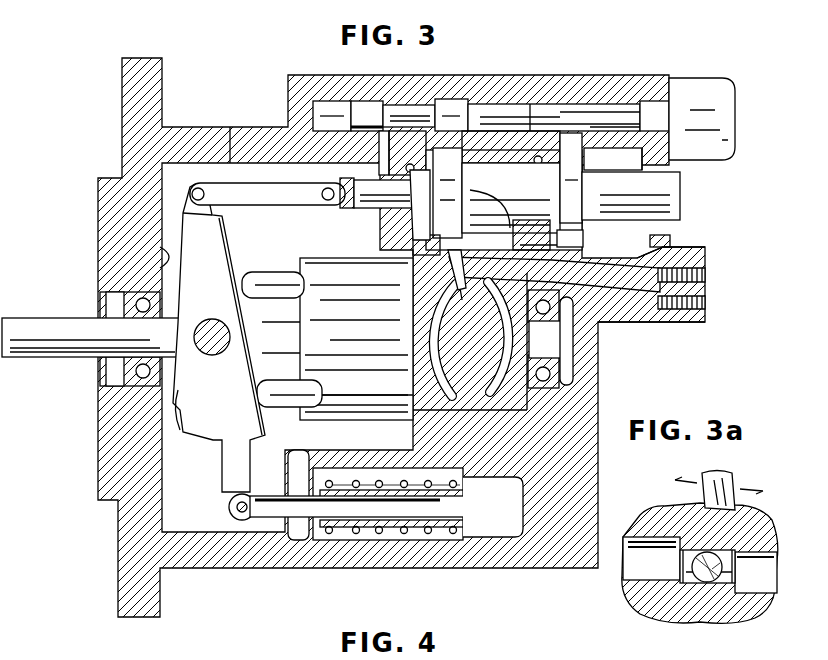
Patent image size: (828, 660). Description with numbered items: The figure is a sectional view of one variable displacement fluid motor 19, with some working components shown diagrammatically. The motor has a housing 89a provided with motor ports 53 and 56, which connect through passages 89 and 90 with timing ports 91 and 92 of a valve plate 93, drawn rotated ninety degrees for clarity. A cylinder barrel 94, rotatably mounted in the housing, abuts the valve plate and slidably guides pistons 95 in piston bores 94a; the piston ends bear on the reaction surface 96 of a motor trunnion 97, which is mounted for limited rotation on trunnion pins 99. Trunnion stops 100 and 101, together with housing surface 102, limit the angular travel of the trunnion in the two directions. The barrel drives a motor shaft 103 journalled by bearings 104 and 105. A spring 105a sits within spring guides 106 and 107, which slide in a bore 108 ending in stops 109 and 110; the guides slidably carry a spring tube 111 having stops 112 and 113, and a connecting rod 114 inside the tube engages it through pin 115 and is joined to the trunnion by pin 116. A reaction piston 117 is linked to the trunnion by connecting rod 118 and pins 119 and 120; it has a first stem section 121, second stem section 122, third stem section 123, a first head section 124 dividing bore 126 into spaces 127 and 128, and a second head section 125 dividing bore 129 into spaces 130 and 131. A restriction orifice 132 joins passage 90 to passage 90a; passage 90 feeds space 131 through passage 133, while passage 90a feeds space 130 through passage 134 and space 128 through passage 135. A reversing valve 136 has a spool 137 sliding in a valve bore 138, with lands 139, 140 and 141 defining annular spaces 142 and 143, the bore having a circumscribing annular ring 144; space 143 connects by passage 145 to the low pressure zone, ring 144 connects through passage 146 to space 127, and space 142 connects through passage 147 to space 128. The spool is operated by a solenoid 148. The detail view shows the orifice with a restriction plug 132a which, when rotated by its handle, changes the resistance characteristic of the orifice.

In FIG. 3, the fluid motor 19 is at (118, 110).
In FIG. 3A, the fluid motor 19 is at (650, 520).
In FIG. 3, the motor port 53 is at (705, 302).
In FIG. 3, the motor port 56 is at (705, 276).
In FIG. 3, the passage 89 is at (645, 312).
In FIG. 3, the housing 89a is at (222, 132).
In FIG. 3, the passage 90 is at (645, 264).
In FIG. 3A, the passage 90 is at (765, 582).
In FIG. 3, the passage 90a is at (478, 292).
In FIG. 3A, the passage 90a is at (636, 570).
In FIG. 3, the timing port 91 is at (512, 340).
In FIG. 3, the timing port 92 is at (438, 372).
In FIG. 3, the valve plate 93 is at (480, 402).
In FIG. 3, the cylinder barrel 94 is at (357, 319).
In FIG. 3, the piston bores 94a is at (332, 420).
In FIG. 3, the pistons 95 is at (280, 408).
In FIG. 3, the reaction surface 96 is at (238, 272).
In FIG. 3, the motor trunnion 97 is at (214, 295).
In FIG. 3, the trunnion pins 99 is at (222, 355).
In FIG. 3, the motor trunnion stop 100 is at (160, 270).
In FIG. 3, the motor trunnion stop 101 is at (188, 425).
In FIG. 3, the surface 102 is at (162, 474).
In FIG. 3, the motor shaft 103 is at (40, 357).
In FIG. 3, the bearing 104 is at (150, 390).
In FIG. 3, the bearing 105 is at (548, 387).
In FIG. 3, the spring 105a is at (395, 540).
In FIG. 3, the spring guide 106 is at (345, 545).
In FIG. 3, the spring guide 107 is at (470, 545).
In FIG. 3, the bore 108 is at (403, 540).
In FIG. 3, the stop 109 is at (325, 545).
In FIG. 3, the stop 110 is at (458, 540).
In FIG. 3, the spring tube 111 is at (480, 478).
In FIG. 3, the stop 112 is at (302, 468).
In FIG. 3, the stop 113 is at (520, 480).
In FIG. 3, the connecting rod 114 is at (262, 496).
In FIG. 3, the pin 115 is at (507, 508).
In FIG. 3, the pin 116 is at (229, 508).
In FIG. 3, the reaction piston 117 is at (518, 189).
In FIG. 3, the connecting rod 118 is at (280, 202).
In FIG. 3, the pin 119 is at (208, 212).
In FIG. 3, the pin 120 is at (322, 202).
In FIG. 3, the first stem section 121 is at (352, 208).
In FIG. 3, the second stem section 122 is at (520, 224).
In FIG. 3, the third stem section 123 is at (680, 202).
In FIG. 3, the first head section 124 is at (430, 242).
In FIG. 3, the second head section 125 is at (580, 190).
In FIG. 3, the bore 126 is at (465, 162).
In FIG. 3, the space 127 is at (420, 234).
In FIG. 3, the space 128 is at (470, 226).
In FIG. 3, the bore 129 is at (598, 158).
In FIG. 3, the space 130 is at (548, 180).
In FIG. 3, the space 131 is at (630, 162).
In FIG. 3, the restriction orifice 132 is at (605, 288).
In FIG. 3A, the restriction orifice 132 is at (740, 622).
In FIG. 3, the restriction plug 132a is at (458, 278).
In FIG. 3A, the restriction plug 132a is at (702, 584).
In FIG. 3, the passage 133 is at (668, 245).
In FIG. 3, the passage 134 is at (583, 240).
In FIG. 3, the passage 135 is at (516, 242).
In FIG. 3, the reversing valve 136 is at (638, 110).
In FIG. 3, the spool 137 is at (600, 110).
In FIG. 3, the valve bore 138 is at (533, 104).
In FIG. 3, the land 139 is at (664, 114).
In FIG. 3, the land 140 is at (462, 101).
In FIG. 3, the land 141 is at (362, 101).
In FIG. 3, the annular space 142 is at (505, 104).
In FIG. 3, the annular space 143 is at (393, 101).
In FIG. 3, the annular ring 144 is at (440, 104).
In FIG. 3, the passage 145 is at (380, 144).
In FIG. 3, the passage 146 is at (428, 152).
In FIG. 3, the passage 147 is at (520, 152).
In FIG. 3, the solenoid 148 is at (736, 108).